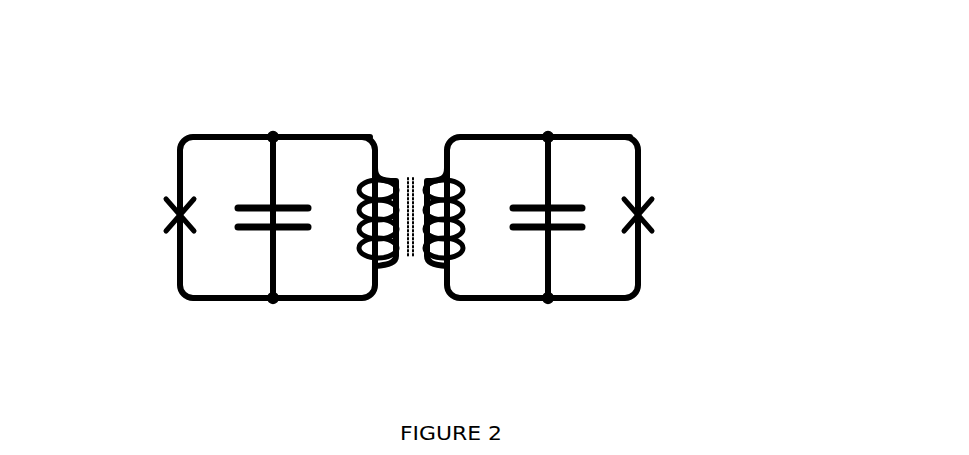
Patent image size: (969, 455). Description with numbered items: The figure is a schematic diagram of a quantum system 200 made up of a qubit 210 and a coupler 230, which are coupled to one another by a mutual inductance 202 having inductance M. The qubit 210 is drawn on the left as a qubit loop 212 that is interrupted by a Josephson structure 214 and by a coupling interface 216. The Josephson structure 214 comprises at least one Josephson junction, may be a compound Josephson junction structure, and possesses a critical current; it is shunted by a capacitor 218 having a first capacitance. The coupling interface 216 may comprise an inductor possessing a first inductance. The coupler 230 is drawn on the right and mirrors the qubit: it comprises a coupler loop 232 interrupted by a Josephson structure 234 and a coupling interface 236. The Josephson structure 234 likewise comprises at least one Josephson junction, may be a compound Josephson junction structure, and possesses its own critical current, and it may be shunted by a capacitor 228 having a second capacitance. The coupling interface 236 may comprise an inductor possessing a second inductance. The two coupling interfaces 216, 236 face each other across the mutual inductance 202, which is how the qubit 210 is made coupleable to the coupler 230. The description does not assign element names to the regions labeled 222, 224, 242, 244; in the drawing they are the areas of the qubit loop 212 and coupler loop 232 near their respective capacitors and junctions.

The quantum system 200 is at (126, 40).
The mutual inductance 202 is at (413, 147).
The qubit 210 is at (215, 105).
The qubit loop 212 is at (308, 136).
The Josephson structure 214 is at (172, 229).
The coupling interface 216 is at (391, 265).
The capacitor 218 is at (297, 232).
The first loop region 222 is at (207, 281).
The second loop region 224 is at (331, 281).
The capacitor 228 is at (565, 233).
The coupler 230 is at (499, 100).
The coupler loop 232 is at (583, 136).
The Josephson structure 234 is at (655, 231).
The coupling interface 236 is at (430, 265).
The third loop region 242 is at (625, 157).
The fourth loop region 244 is at (531, 289).